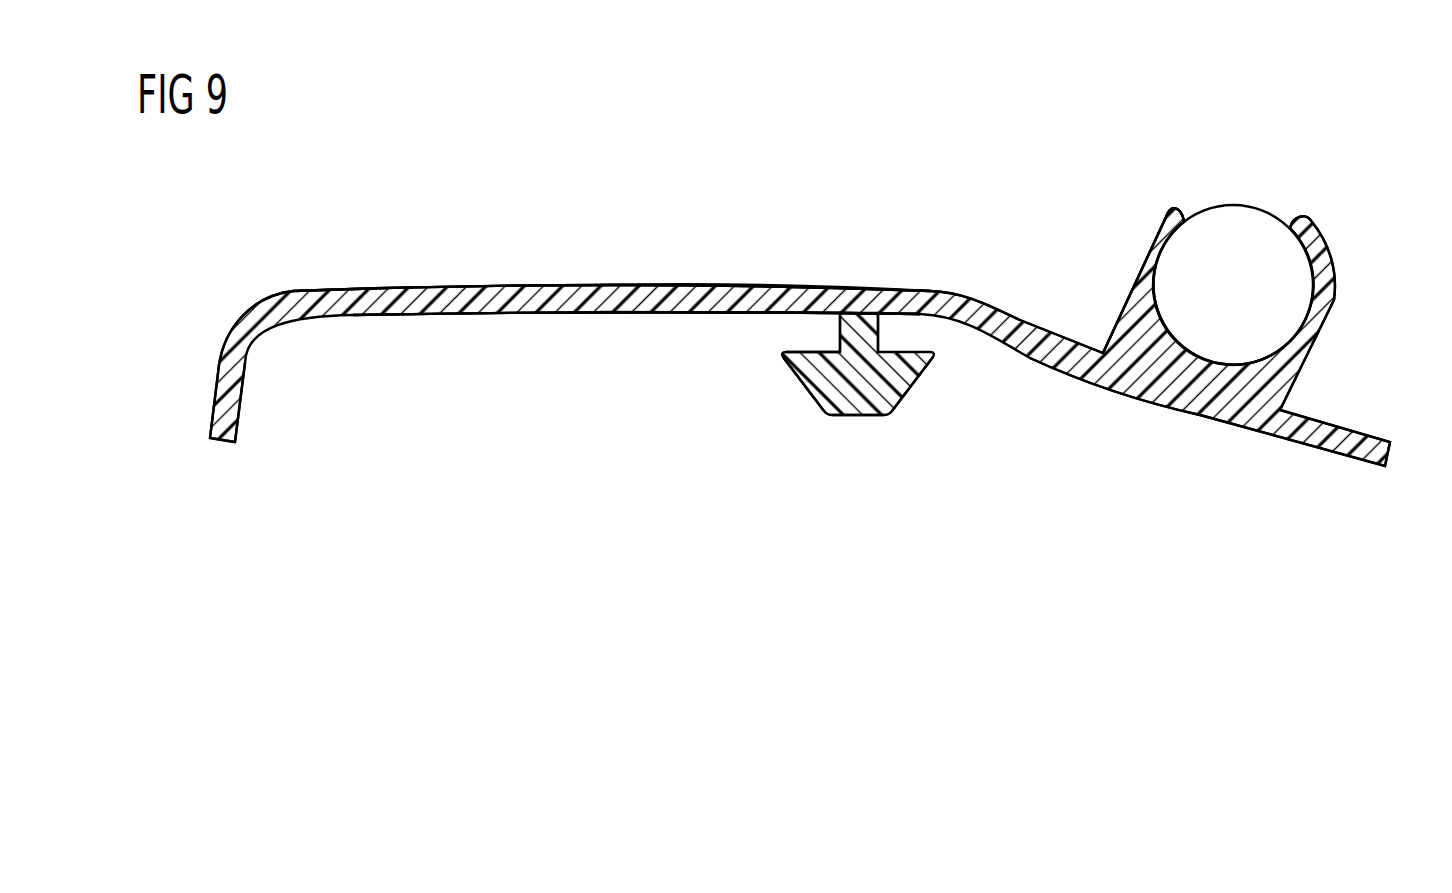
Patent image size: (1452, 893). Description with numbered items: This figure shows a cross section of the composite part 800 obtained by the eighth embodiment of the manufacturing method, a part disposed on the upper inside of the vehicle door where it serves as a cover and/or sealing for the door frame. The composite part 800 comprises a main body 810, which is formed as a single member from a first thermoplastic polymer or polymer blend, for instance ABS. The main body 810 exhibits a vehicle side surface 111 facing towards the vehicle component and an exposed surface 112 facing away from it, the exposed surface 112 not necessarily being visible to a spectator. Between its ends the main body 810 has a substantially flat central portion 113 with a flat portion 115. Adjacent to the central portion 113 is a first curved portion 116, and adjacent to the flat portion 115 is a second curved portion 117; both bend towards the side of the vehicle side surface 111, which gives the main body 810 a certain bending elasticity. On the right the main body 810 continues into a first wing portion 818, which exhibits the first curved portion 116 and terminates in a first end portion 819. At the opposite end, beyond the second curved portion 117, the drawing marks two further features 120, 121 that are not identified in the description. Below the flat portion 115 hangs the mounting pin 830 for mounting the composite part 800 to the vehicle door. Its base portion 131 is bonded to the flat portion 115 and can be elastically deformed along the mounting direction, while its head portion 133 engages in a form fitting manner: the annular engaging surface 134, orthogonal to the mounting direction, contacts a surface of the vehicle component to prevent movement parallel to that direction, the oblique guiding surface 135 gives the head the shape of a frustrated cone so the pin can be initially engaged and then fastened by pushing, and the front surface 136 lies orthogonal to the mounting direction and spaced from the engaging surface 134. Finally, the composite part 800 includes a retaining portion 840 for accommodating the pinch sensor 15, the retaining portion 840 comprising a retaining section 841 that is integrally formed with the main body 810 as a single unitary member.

The composite part 800 is at (633, 148).
The main body 810 is at (452, 268).
The vehicle side surface 111 is at (337, 318).
The exposed surface 112 is at (595, 283).
The central portion 113 is at (722, 290).
The flat portion 115 is at (588, 318).
The first curved portion 116 is at (995, 275).
The second curved portion 117 is at (225, 313).
The leg 120 is at (220, 393).
The leg end face 121 is at (219, 457).
The mounting pin 830 is at (818, 442).
The base portion 131 is at (877, 333).
The head portion 133 is at (855, 393).
The engaging surface 134 is at (823, 350).
The guiding surface 135 is at (803, 388).
The front surface 136 is at (876, 418).
The retaining portion 840 is at (1305, 166).
The retaining section 841 is at (1140, 240).
The pinch sensor 15 is at (1210, 233).
The first wing portion 818 is at (1117, 385).
The first end portion 819 is at (1397, 463).